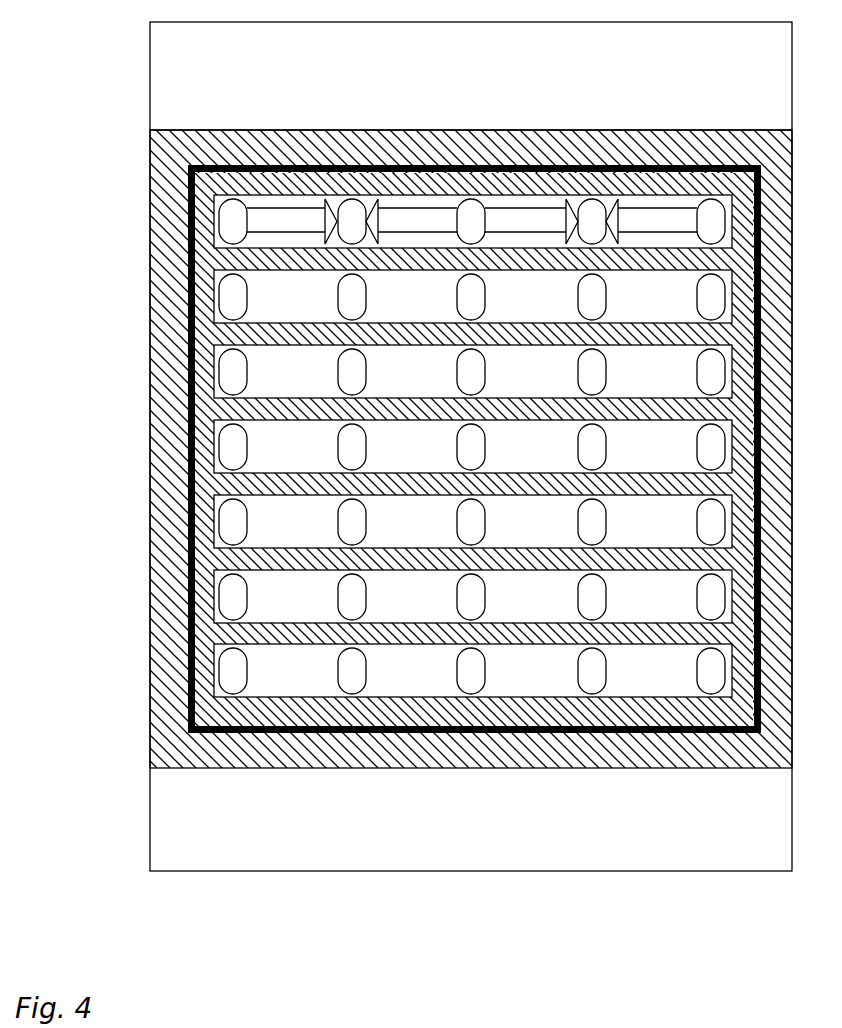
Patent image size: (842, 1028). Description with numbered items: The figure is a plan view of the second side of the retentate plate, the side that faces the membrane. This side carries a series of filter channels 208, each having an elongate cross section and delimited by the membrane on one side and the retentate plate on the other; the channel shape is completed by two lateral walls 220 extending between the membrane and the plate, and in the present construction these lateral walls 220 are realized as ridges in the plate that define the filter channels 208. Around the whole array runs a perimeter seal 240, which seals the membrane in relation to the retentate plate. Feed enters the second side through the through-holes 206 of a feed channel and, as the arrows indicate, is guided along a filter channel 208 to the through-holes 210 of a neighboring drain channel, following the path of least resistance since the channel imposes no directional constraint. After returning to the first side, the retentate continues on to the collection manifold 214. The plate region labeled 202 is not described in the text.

The substrate 202 is at (420, 831).
The collection manifold 214 is at (505, 92).
The through-holes 206 is at (230, 222).
The filter channels 208 is at (283, 203).
The through-holes 210 is at (355, 210).
The lateral walls 220 is at (263, 258).
The perimeter seal 240 is at (187, 513).